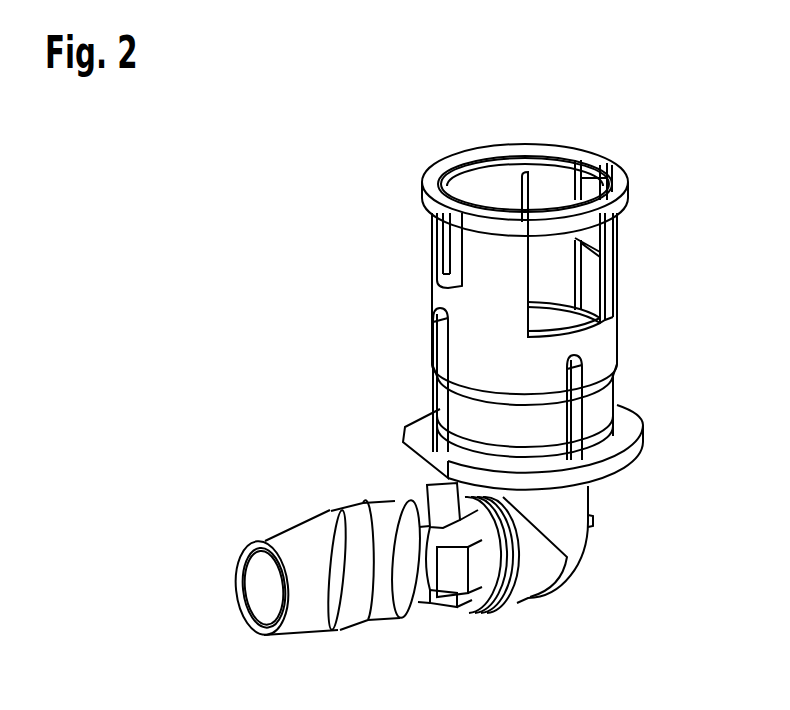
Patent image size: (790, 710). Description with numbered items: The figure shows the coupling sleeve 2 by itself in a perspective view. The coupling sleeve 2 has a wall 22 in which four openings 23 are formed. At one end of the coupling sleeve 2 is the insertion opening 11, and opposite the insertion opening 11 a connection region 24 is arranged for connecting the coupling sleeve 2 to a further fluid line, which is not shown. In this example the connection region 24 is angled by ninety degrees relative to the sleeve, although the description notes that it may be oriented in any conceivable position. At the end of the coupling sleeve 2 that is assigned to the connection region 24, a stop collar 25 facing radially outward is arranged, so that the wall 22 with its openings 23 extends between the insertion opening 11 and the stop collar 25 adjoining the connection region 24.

The insertion opening 11 is at (449, 135).
The coupling sleeve 2 is at (604, 338).
The wall 22 is at (405, 367).
The openings 23 is at (495, 180).
The connection region 24 is at (633, 520).
The stop collar 25 is at (632, 434).